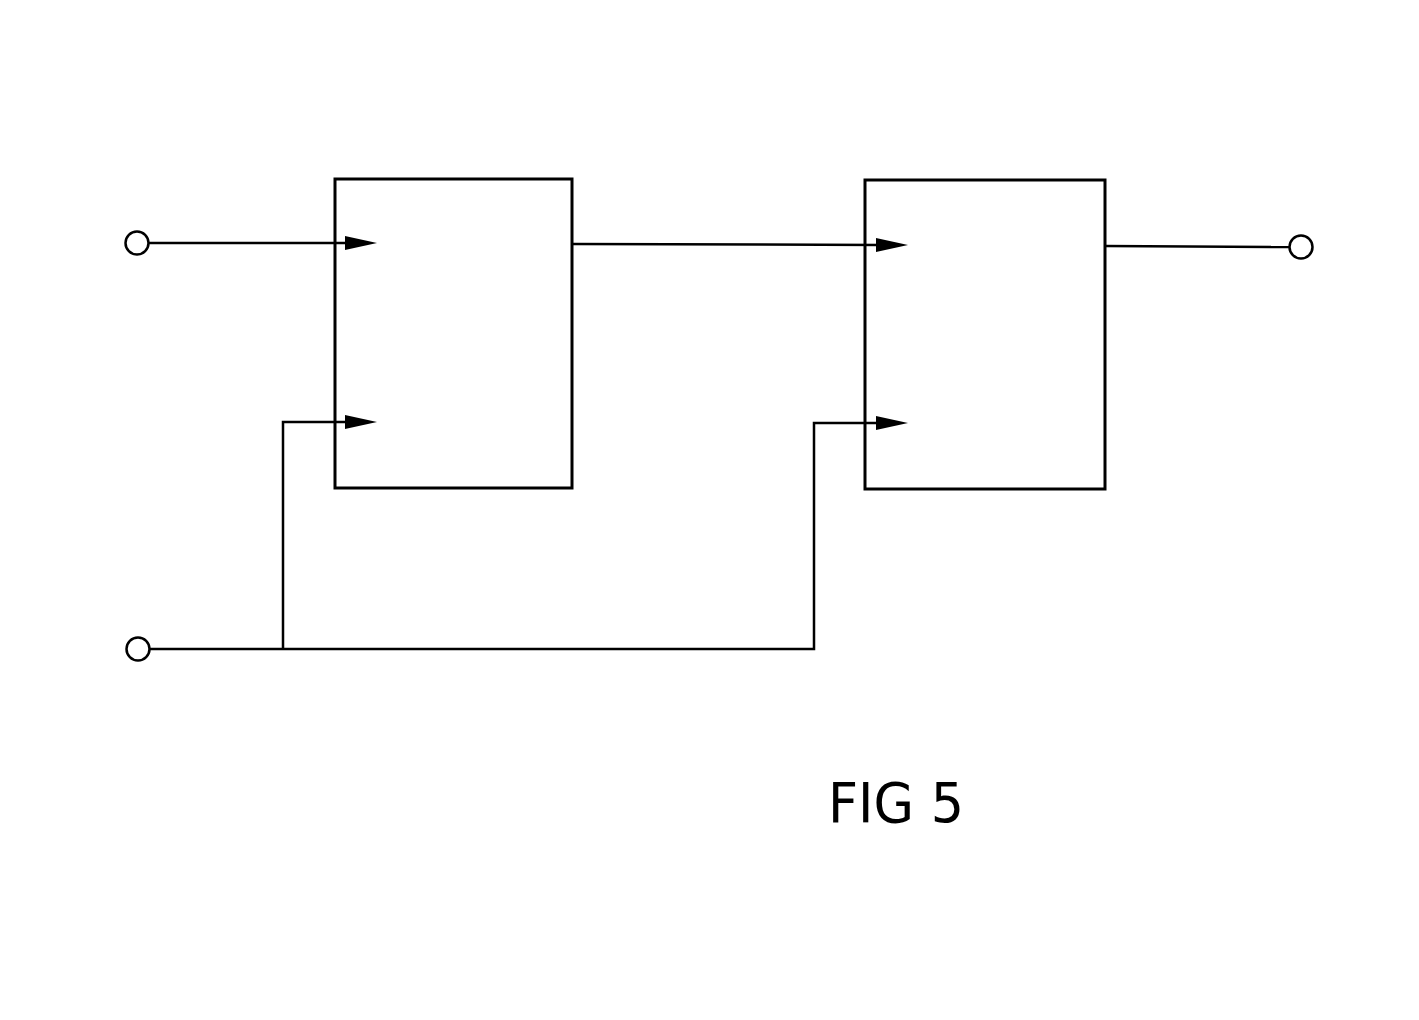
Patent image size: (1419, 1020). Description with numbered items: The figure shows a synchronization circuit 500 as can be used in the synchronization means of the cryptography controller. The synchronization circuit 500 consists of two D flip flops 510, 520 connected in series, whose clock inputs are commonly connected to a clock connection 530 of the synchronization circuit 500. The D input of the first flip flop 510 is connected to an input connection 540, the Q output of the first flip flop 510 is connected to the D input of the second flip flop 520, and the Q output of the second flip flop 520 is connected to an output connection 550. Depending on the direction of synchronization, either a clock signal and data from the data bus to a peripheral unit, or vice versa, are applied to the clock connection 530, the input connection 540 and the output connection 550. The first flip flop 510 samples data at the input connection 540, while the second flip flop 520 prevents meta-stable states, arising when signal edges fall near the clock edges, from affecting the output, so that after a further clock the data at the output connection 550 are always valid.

The synchronization circuit 500 is at (1118, 636).
The first flip flop 510 is at (458, 178).
The second flip flop 520 is at (973, 178).
The clock connection 530 is at (133, 661).
The input connection 540 is at (137, 231).
The output connection 550 is at (1301, 235).